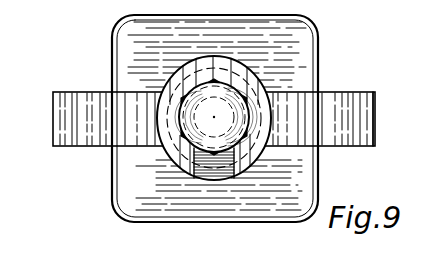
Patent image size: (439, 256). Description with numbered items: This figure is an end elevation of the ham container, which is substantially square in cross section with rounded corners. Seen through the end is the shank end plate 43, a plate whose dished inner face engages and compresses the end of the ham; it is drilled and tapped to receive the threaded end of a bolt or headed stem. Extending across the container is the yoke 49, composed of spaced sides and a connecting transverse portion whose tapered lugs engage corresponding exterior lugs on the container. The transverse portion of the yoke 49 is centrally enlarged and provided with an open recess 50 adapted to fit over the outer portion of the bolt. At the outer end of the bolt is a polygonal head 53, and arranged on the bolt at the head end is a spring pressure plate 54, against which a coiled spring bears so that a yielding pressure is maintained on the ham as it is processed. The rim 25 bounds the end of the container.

The shank end plate 43 is at (157, 39).
The plate rim 25 is at (318, 48).
The yoke 49 is at (81, 100).
The polygonal head 53 is at (237, 92).
The open recess 50 is at (208, 175).
The spring pressure plate 54 is at (223, 180).